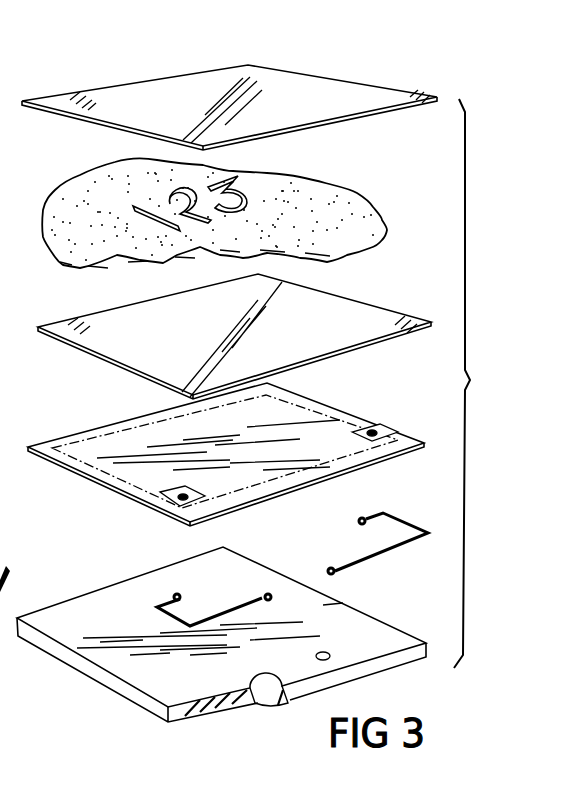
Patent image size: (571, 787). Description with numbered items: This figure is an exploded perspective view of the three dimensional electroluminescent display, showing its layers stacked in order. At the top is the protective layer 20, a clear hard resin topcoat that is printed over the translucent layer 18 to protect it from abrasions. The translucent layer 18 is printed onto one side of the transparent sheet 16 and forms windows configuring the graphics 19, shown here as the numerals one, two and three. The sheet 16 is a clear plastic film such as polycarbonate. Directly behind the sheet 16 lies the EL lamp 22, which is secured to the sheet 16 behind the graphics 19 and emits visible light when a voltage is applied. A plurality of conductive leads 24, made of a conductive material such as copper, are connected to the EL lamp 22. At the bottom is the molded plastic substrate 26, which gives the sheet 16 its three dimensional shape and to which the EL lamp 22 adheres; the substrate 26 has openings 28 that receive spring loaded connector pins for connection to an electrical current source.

The sheet 16 is at (362, 316).
The translucent layer 18 is at (360, 212).
The graphics 19 is at (256, 178).
The protective layer 20 is at (355, 92).
The EL lamp 22 is at (317, 440).
The conductive leads 24 is at (333, 568).
The substrate 26 is at (368, 618).
The openings 28 is at (328, 660).